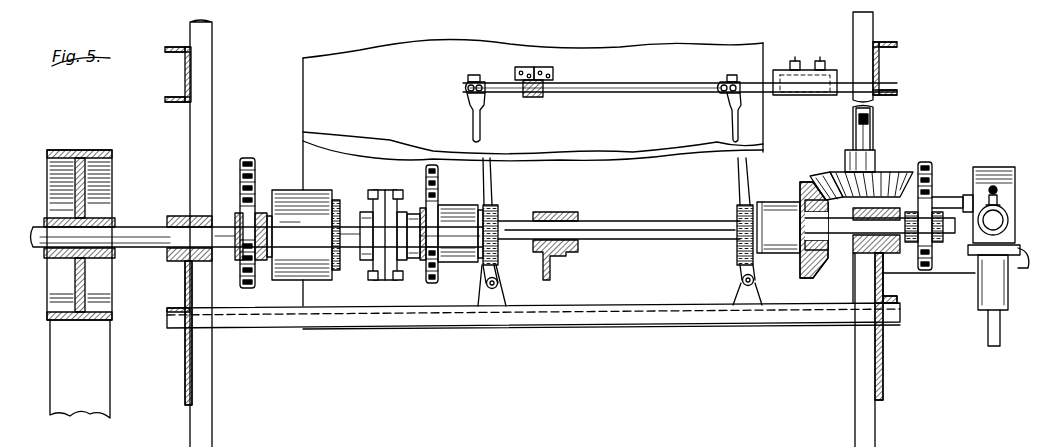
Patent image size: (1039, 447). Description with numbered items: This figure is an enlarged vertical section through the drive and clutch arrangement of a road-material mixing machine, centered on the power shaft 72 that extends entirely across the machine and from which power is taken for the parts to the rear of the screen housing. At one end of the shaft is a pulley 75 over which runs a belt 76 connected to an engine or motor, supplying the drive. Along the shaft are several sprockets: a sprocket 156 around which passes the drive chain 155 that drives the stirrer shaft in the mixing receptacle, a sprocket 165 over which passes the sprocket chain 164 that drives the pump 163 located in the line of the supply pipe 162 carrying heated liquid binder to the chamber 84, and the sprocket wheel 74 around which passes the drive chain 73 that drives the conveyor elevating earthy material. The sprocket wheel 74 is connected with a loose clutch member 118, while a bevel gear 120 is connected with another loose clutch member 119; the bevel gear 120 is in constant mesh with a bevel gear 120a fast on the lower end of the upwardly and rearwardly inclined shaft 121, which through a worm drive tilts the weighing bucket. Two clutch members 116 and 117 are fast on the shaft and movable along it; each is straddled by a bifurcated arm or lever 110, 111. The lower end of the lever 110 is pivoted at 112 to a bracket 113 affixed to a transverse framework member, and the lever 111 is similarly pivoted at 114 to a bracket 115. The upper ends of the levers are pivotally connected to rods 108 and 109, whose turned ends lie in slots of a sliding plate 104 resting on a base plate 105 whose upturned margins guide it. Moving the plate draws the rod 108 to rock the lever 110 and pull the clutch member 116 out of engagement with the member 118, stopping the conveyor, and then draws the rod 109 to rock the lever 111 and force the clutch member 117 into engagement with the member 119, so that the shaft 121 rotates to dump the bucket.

The power shaft 72 is at (640, 218).
The drive chain 73 is at (438, 172).
The sprocket wheel 74 is at (440, 236).
The pulley 75 is at (47, 320).
The belt 76 is at (110, 383).
The chamber 84 is at (303, 136).
The sliding plate 104 is at (838, 58).
The base plate 105 is at (879, 68).
The rod 108 is at (495, 92).
The rod 109 is at (750, 74).
The arm or lever 110 is at (490, 163).
The arm or lever 111 is at (738, 160).
The pivot 112 is at (486, 283).
The bracket 113 is at (490, 306).
The pivot 114 is at (742, 280).
The bracket 115 is at (748, 305).
The clutch member 116 is at (538, 212).
The clutch member 117 is at (737, 232).
The loose clutch member 118 is at (483, 208).
The loose clutch member 119 is at (778, 200).
The bevel gear 120 is at (812, 274).
The bevel gear 120a is at (822, 172).
The inclined shaft 121 is at (868, 126).
The drive chain 155 is at (247, 158).
The sprocket 156 is at (238, 258).
The pipe 162 is at (996, 348).
The pump 163 is at (992, 160).
The sprocket chain 164 is at (925, 162).
The sprocket 165 is at (925, 270).